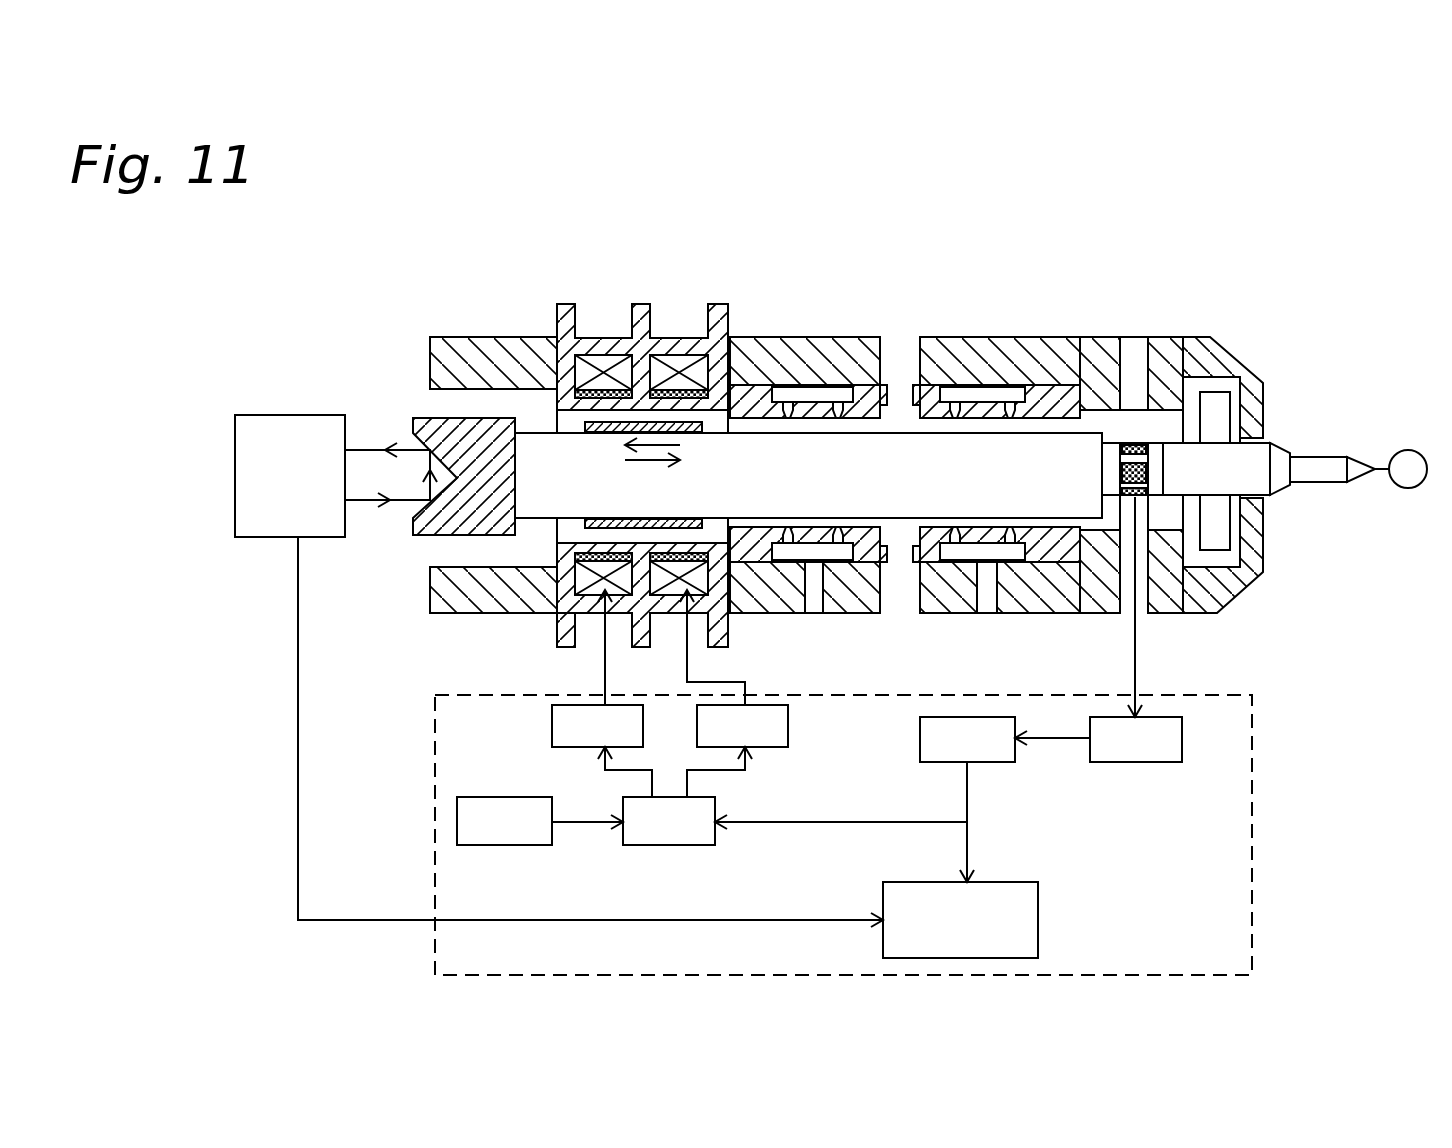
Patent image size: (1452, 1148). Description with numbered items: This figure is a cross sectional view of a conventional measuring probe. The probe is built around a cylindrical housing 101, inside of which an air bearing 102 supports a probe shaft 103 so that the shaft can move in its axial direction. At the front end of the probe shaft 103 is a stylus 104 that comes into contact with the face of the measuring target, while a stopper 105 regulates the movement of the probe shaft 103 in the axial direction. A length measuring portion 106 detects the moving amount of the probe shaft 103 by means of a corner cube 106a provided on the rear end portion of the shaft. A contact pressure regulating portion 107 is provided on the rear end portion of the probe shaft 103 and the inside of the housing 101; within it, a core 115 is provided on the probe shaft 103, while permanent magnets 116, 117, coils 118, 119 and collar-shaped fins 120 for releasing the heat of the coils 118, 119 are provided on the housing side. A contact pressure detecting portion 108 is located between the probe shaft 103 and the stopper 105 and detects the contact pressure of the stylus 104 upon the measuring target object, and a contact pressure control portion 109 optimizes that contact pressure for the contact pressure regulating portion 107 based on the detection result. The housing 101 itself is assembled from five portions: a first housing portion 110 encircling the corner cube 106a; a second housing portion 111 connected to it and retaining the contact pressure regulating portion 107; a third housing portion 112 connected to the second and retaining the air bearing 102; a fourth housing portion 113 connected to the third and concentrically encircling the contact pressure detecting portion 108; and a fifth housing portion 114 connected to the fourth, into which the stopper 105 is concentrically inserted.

The cylindrical housing 101 is at (795, 350).
The air bearing 102 is at (1010, 387).
The probe shaft 103 is at (540, 437).
The stylus 104 is at (1318, 465).
The stopper 105 is at (1218, 415).
The length measuring portion 106 is at (272, 537).
The corner cube 106a is at (430, 418).
The contact pressure regulating portion 107 is at (677, 320).
The contact pressure detecting portion 108 is at (1153, 507).
The contact pressure control portion 109 is at (1252, 793).
The first housing portion 110 is at (453, 345).
The second housing portion 111 is at (597, 337).
The third housing portion 112 is at (852, 592).
The fourth housing portion 113 is at (1105, 592).
The fifth housing portion 114 is at (1253, 360).
The core 115 is at (587, 530).
The permanent magnet 116 is at (605, 525).
The permanent magnet 117 is at (703, 537).
The coil 118 is at (607, 597).
The coil 119 is at (703, 578).
The collar-shaped fins 120 is at (567, 642).